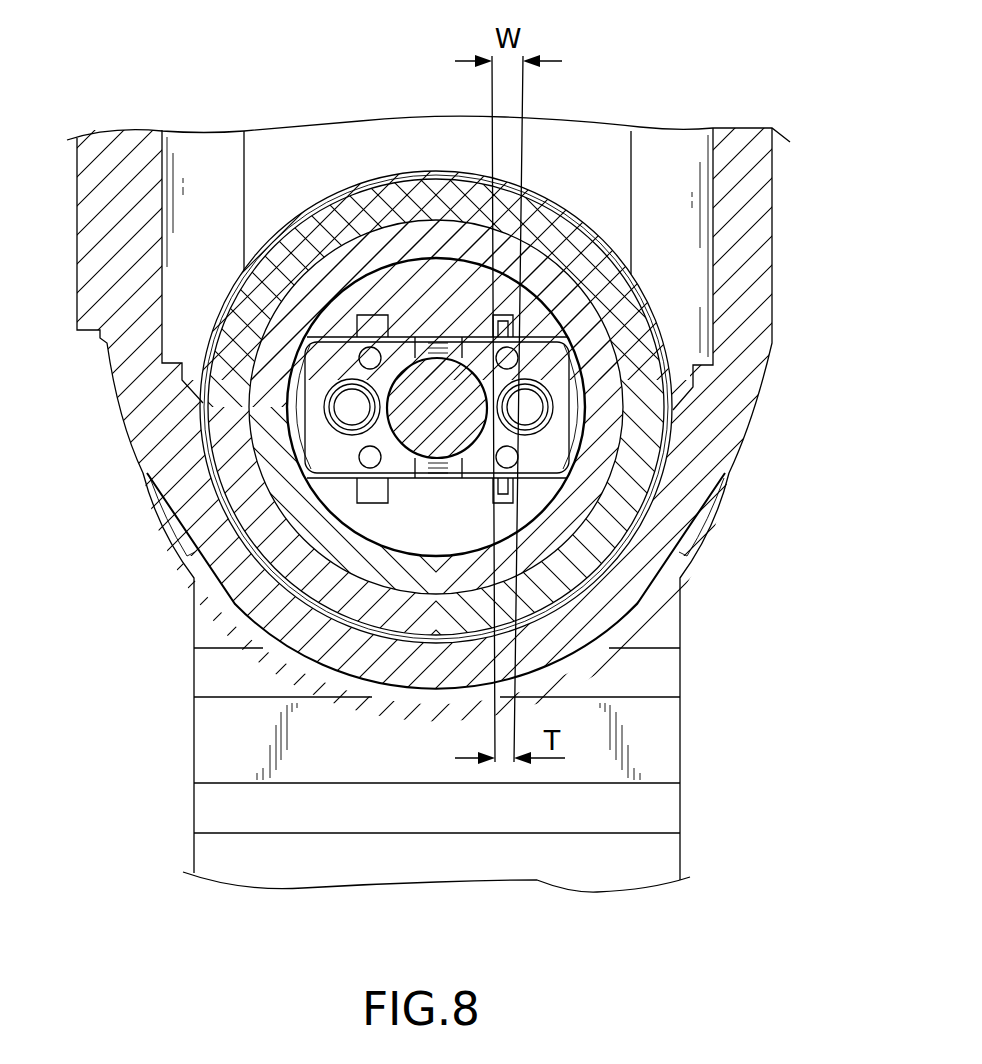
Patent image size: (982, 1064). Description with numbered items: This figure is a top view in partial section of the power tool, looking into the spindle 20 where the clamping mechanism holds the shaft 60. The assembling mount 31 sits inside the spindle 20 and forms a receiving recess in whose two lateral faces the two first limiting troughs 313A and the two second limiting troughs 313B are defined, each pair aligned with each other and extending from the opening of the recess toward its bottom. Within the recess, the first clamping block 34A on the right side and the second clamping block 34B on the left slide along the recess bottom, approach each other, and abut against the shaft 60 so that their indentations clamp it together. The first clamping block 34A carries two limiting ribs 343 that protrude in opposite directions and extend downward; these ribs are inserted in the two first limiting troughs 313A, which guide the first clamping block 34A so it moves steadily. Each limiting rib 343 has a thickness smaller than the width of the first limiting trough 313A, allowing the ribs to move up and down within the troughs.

The spindle 20 is at (306, 303).
The assembling mount 31 is at (400, 288).
The first clamping block 34A is at (554, 437).
The second clamping block 34B is at (334, 362).
The shaft 60 is at (444, 388).
The limiting ribs 343 is at (500, 331).
The first limiting troughs 313A is at (495, 490).
The second limiting troughs 313B is at (368, 486).